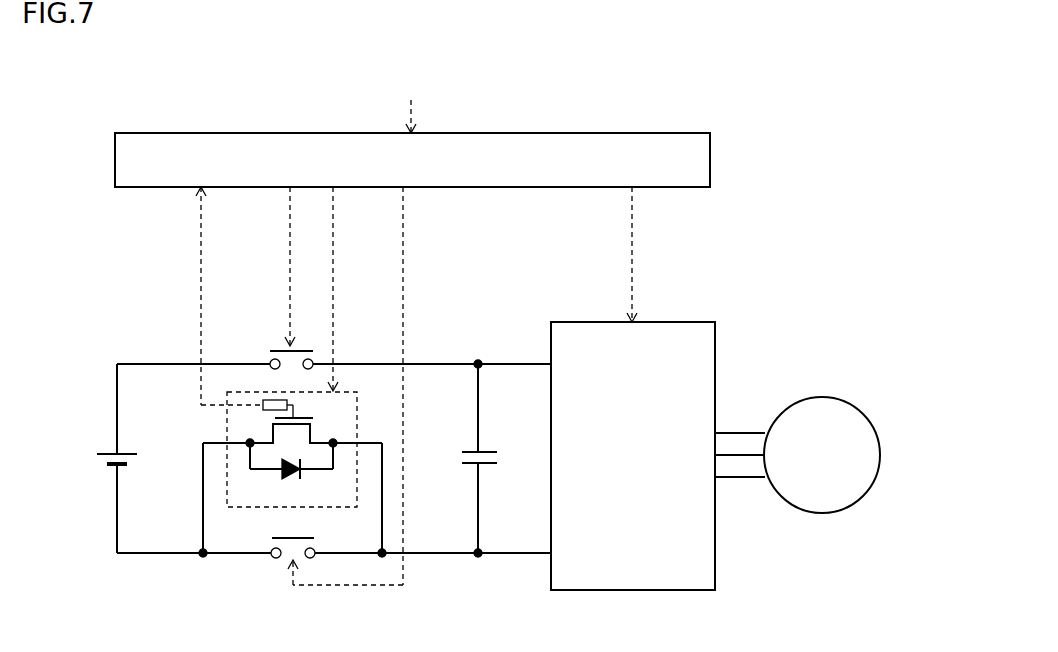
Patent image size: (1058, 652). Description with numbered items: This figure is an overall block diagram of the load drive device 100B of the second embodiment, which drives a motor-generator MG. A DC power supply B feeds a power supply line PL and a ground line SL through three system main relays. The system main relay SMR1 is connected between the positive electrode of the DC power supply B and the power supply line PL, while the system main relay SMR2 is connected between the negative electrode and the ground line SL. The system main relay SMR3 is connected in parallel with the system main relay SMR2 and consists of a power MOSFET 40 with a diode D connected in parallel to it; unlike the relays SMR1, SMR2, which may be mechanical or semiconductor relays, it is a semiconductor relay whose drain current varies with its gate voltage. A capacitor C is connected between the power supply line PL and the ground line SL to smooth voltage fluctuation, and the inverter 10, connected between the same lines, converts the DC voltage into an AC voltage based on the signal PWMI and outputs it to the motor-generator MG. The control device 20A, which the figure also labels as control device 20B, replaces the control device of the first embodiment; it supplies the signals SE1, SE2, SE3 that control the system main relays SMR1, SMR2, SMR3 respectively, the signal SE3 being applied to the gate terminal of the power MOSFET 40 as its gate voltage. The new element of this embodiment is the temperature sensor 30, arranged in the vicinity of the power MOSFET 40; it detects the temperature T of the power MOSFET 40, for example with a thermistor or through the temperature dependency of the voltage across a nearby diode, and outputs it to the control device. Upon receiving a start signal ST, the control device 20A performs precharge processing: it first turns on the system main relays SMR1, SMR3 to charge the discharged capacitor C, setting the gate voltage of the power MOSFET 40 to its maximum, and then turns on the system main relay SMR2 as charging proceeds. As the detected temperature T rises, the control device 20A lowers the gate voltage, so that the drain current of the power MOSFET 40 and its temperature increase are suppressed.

The load drive device 100B is at (127, 76).
The control device 20A is at (655, 133).
The control device 20B is at (412, 160).
The inverter 10 is at (660, 322).
The temperature sensor 30 is at (273, 398).
The power MOSFET 40 is at (301, 417).
The start signal ST is at (408, 106).
The temperature T is at (221, 296).
The signal SE1 is at (269, 266).
The signal SE2 is at (345, 399).
The signal SE3 is at (349, 289).
The signal PWMI is at (655, 254).
The system main relay SMR1 is at (278, 348).
The system main relay SMR2 is at (297, 537).
The system main relay SMR3 is at (227, 428).
The diode D is at (282, 474).
The DC power supply B is at (110, 452).
The capacitor C is at (478, 450).
The power supply line PL is at (447, 362).
The ground line SL is at (443, 556).
The motor-generator MG is at (822, 397).